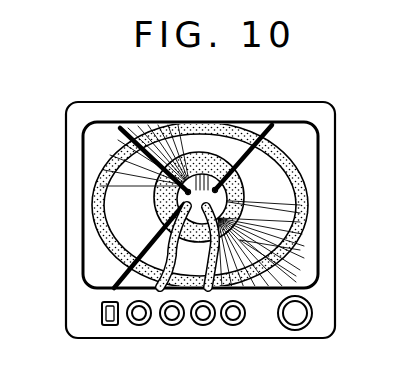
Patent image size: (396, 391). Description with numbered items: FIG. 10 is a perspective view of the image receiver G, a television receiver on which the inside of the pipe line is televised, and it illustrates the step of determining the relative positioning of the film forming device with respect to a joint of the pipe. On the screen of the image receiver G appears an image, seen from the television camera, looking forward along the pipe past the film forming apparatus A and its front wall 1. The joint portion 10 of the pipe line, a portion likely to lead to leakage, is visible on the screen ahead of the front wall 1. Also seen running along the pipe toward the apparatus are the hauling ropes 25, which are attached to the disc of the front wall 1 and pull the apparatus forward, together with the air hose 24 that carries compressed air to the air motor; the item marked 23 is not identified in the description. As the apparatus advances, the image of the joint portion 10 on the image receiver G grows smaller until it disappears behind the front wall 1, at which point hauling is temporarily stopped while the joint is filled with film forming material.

The front wall 1 is at (166, 130).
The joint portion 10 is at (97, 161).
The tube 23 is at (205, 287).
The air hose 24 is at (170, 287).
The hauling ropes 25 is at (154, 176).
The film forming apparatus A is at (298, 265).
The image receiver G is at (63, 246).